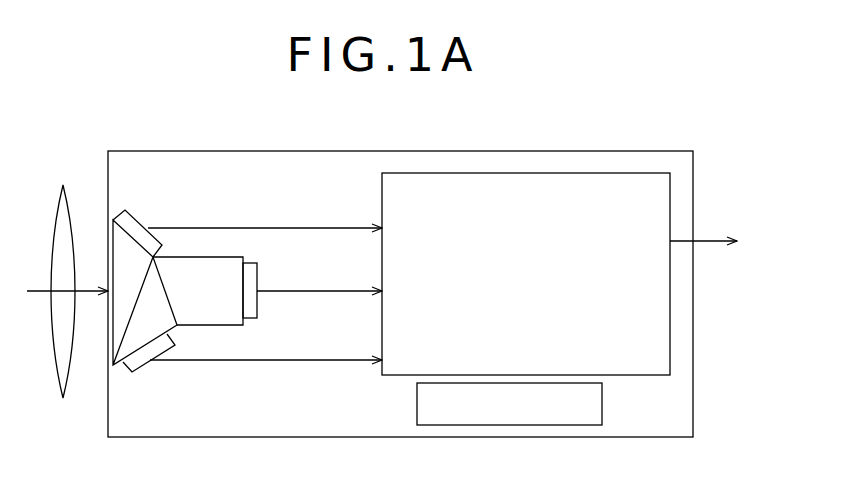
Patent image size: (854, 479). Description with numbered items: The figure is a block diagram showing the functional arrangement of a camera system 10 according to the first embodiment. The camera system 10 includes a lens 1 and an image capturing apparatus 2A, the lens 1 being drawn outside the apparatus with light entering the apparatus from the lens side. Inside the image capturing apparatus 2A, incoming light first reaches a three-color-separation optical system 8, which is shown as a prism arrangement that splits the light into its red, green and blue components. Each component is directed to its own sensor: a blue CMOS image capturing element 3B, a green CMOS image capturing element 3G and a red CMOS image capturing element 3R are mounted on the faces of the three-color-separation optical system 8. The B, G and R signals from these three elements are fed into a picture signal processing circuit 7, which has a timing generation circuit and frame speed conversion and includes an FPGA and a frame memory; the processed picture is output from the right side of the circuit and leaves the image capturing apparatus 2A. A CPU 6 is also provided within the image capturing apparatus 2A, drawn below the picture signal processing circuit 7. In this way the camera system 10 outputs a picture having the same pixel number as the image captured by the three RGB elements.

The lens 1 is at (65, 186).
The camera system 10 is at (372, 135).
The image capturing apparatus 2A is at (693, 171).
The blue CMOS image capturing element 3B is at (147, 223).
The green CMOS image capturing element 3G is at (258, 263).
The red CMOS image capturing element 3R is at (142, 376).
The three-color-separation optical system 8 is at (187, 256).
The picture signal processing circuit 7 is at (382, 180).
The CPU 6 is at (602, 397).